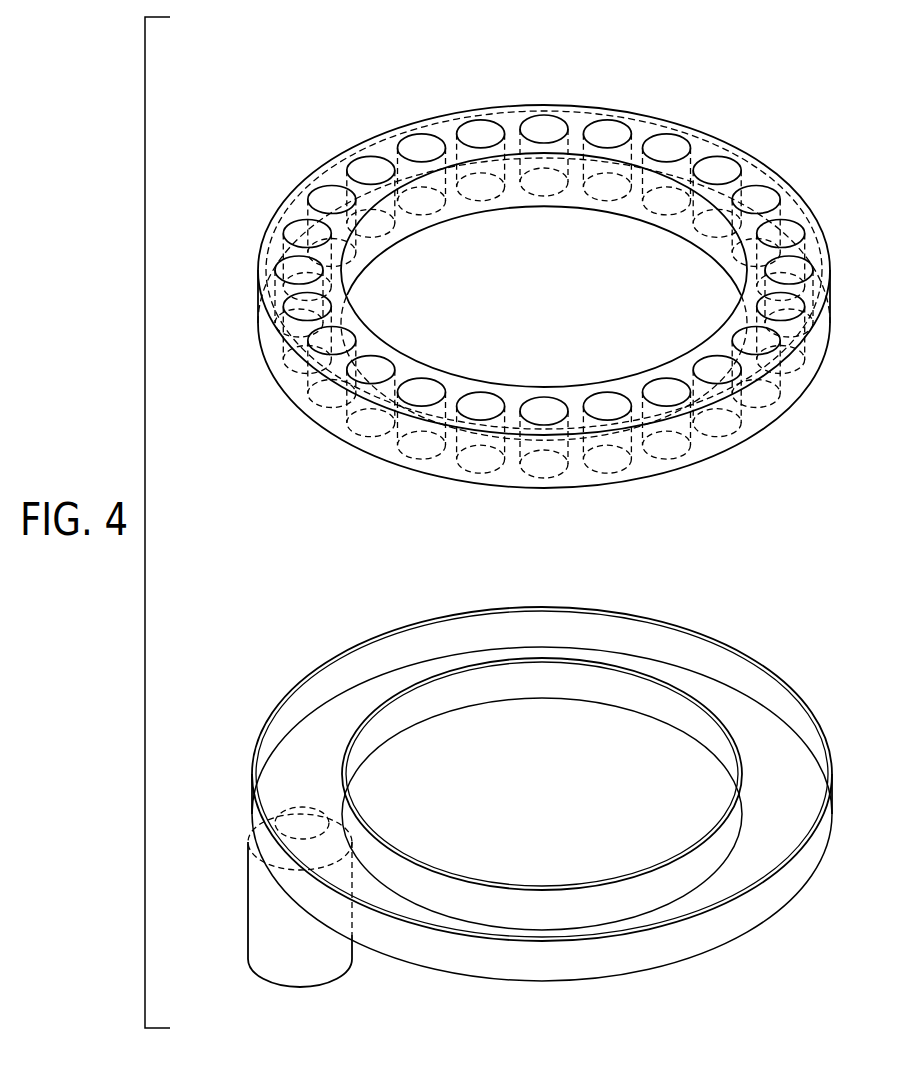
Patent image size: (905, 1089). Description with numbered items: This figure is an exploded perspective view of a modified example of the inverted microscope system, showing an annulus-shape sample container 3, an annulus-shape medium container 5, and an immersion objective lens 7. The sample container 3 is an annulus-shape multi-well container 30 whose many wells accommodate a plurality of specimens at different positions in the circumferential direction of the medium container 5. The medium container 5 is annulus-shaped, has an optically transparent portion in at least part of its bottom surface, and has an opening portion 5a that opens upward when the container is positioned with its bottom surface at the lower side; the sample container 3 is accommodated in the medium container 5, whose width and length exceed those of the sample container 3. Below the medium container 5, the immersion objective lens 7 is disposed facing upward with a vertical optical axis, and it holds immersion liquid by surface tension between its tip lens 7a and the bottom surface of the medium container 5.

The sample container 3 is at (521, 265).
The multi-well container 30 is at (505, 122).
The medium container 5 is at (508, 782).
The opening portion 5a is at (365, 660).
The immersion objective lens 7 is at (257, 913).
The tip lens 7a is at (248, 836).